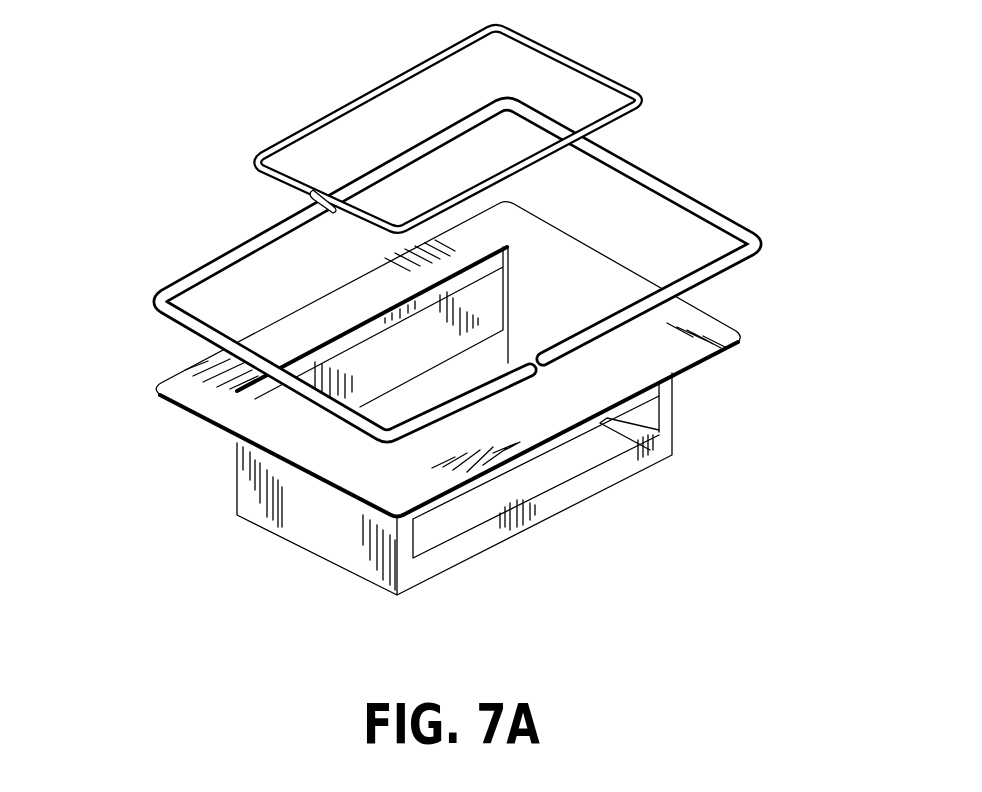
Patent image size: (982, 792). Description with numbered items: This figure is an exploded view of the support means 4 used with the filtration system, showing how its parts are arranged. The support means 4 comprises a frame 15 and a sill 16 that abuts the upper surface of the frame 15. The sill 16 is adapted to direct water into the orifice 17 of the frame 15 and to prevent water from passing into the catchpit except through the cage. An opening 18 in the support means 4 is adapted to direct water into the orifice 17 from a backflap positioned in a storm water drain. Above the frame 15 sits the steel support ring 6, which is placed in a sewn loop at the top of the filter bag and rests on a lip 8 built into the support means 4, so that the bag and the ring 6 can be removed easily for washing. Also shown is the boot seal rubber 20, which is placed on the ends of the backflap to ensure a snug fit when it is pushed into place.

The support means 4 is at (672, 403).
The steel support ring 6 is at (570, 50).
The lip 8 is at (600, 437).
The frame 15 is at (277, 493).
The sill 16 is at (183, 392).
The orifice 17 is at (380, 363).
The opening 18 is at (423, 532).
The boot seal rubber 20 is at (663, 176).